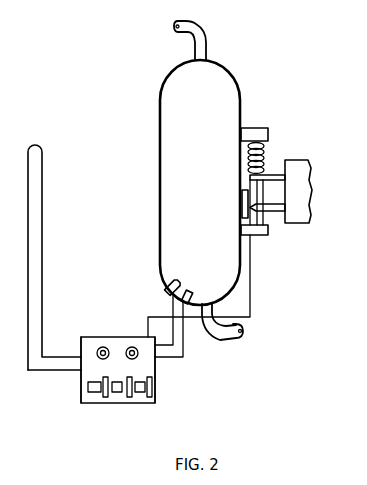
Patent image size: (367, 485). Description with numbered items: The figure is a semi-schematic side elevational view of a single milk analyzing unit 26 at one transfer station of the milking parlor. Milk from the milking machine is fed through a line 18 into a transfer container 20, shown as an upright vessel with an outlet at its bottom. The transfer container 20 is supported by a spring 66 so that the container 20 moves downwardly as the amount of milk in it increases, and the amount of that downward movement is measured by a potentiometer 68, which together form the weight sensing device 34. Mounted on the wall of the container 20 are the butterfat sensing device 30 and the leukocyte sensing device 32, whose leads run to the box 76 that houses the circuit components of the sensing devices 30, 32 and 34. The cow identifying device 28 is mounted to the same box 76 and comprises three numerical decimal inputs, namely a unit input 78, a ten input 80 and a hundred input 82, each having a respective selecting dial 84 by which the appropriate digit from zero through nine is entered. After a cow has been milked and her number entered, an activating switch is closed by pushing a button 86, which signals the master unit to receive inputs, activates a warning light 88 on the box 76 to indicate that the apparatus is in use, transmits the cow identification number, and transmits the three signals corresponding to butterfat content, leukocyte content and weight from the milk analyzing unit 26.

The line 18 is at (186, 30).
The transfer container 20 is at (234, 88).
The milk analyzing unit 26 is at (103, 335).
The cow identifying device 28 is at (157, 383).
The butterfat sensing device 30 is at (165, 280).
The leukocyte sensing device 32 is at (191, 297).
The weight sensing device 34 is at (273, 156).
The spring 66 is at (268, 152).
The potentiometer 68 is at (242, 205).
The box 76 is at (88, 373).
The unit input 78 is at (140, 393).
The 10 input 80 is at (117, 393).
The 100 input 82 is at (88, 393).
The selecting dial 84 is at (150, 398).
The button 86 is at (131, 346).
The warning light 88 is at (100, 348).